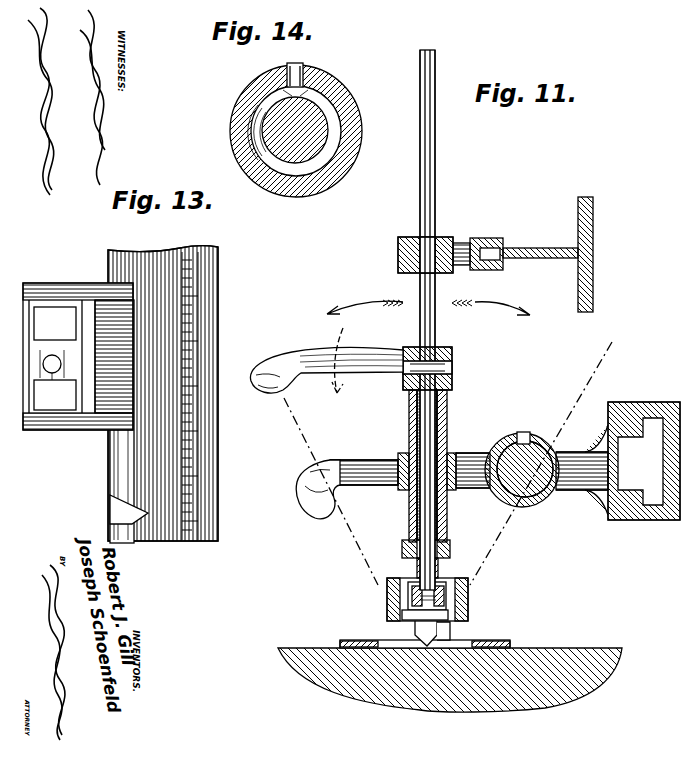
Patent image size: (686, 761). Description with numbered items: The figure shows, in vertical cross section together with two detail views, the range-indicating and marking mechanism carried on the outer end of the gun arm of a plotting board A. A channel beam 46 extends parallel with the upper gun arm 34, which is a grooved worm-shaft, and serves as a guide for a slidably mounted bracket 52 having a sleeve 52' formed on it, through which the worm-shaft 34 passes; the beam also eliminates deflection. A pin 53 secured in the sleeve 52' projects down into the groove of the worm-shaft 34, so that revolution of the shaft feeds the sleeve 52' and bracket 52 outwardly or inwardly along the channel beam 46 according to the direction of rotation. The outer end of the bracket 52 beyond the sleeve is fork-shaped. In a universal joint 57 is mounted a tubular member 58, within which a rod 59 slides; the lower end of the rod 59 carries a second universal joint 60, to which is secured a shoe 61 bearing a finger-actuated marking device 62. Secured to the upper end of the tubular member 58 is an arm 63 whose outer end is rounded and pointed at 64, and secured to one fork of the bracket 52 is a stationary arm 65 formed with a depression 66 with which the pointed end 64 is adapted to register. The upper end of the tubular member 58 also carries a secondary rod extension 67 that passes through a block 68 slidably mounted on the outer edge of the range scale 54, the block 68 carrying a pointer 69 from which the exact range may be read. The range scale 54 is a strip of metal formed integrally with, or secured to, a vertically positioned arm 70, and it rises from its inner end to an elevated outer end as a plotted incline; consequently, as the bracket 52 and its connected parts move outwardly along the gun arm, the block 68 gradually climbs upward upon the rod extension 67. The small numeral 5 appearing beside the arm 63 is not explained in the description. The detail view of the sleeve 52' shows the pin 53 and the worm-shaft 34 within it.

In FIG. 11, the plotting board A is at (478, 715).
In FIG. 11, the swing direction indicator 5 is at (339, 351).
In FIG. 14, the upper gun arm 34 is at (295, 130).
In FIG. 11, the upper gun arm 34 is at (515, 490).
In FIG. 11, the channel beam 46 is at (644, 452).
In FIG. 11, the bracket 52 is at (527, 470).
In FIG. 14, the sleeve 52' is at (288, 131).
In FIG. 11, the sleeve 52' is at (532, 478).
In FIG. 14, the pin 53 is at (310, 71).
In FIG. 11, the pin 53 is at (534, 440).
In FIG. 13, the range scale 54 is at (163, 258).
In FIG. 11, the range scale 54 is at (524, 251).
In FIG. 11, the universal joint 57 is at (410, 453).
In FIG. 11, the tubular member 58 is at (444, 424).
In FIG. 11, the rod 59 is at (418, 415).
In FIG. 11, the universal joint 60 is at (470, 576).
In FIG. 11, the shoe 61 is at (474, 640).
In FIG. 11, the marking device 62 is at (455, 640).
In FIG. 11, the arm 63 is at (326, 363).
In FIG. 11, the pointed end 64 is at (268, 392).
In FIG. 11, the stationary arm 65 is at (306, 512).
In FIG. 11, the depression 66 is at (330, 468).
In FIG. 13, the secondary rod extension 67 is at (55, 395).
In FIG. 11, the secondary rod extension 67 is at (420, 180).
In FIG. 13, the sliding block 68 is at (82, 440).
In FIG. 11, the sliding block 68 is at (408, 230).
In FIG. 13, the pointer 69 is at (122, 491).
In FIG. 11, the vertically positioned arm 70 is at (594, 215).